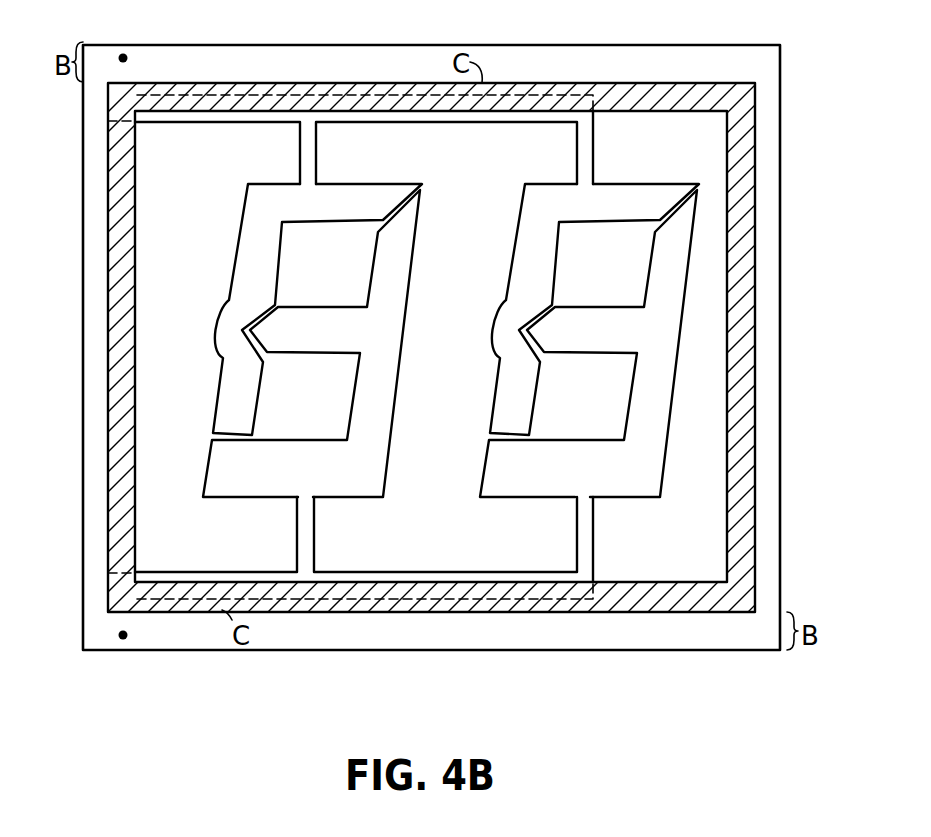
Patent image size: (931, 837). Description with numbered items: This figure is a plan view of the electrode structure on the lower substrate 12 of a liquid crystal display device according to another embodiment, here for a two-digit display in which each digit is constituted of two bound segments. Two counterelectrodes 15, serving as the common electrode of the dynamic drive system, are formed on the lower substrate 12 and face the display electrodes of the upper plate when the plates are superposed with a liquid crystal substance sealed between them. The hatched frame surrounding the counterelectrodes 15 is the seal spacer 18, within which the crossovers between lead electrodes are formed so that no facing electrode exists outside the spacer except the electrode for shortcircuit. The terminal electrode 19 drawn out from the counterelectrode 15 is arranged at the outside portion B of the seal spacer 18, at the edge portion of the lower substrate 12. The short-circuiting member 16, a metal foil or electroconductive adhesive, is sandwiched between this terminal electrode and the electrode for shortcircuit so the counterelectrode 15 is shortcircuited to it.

The lower substrate 12 is at (768, 70).
The counterelectrode 15 is at (390, 158).
The short-circuiting member 16 is at (124, 56).
The seal spacer 18 is at (738, 358).
The terminal electrode 19 is at (567, 52).